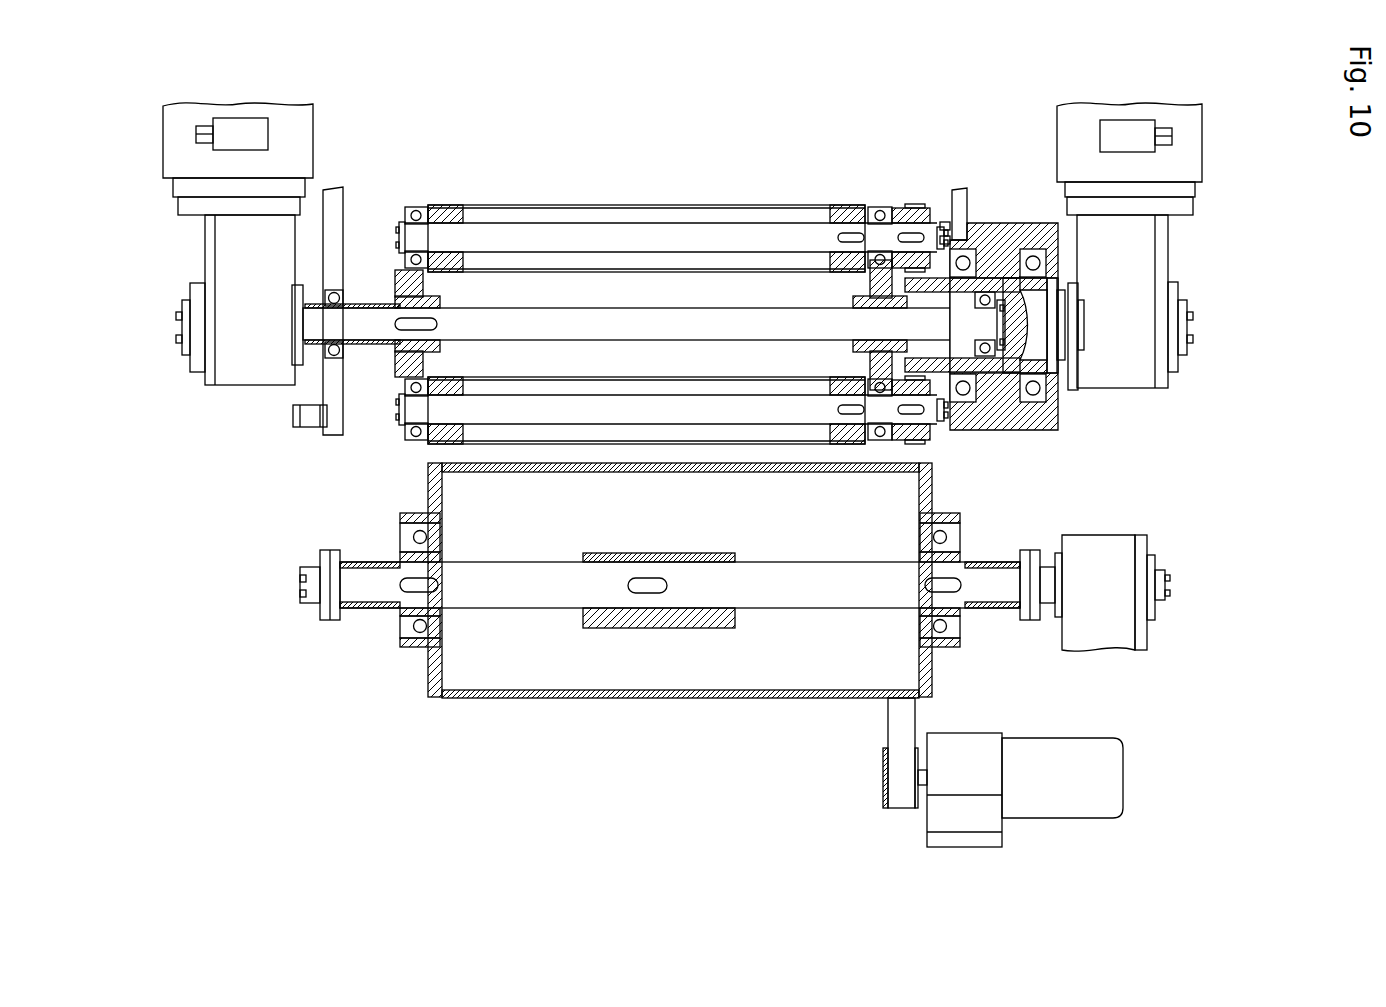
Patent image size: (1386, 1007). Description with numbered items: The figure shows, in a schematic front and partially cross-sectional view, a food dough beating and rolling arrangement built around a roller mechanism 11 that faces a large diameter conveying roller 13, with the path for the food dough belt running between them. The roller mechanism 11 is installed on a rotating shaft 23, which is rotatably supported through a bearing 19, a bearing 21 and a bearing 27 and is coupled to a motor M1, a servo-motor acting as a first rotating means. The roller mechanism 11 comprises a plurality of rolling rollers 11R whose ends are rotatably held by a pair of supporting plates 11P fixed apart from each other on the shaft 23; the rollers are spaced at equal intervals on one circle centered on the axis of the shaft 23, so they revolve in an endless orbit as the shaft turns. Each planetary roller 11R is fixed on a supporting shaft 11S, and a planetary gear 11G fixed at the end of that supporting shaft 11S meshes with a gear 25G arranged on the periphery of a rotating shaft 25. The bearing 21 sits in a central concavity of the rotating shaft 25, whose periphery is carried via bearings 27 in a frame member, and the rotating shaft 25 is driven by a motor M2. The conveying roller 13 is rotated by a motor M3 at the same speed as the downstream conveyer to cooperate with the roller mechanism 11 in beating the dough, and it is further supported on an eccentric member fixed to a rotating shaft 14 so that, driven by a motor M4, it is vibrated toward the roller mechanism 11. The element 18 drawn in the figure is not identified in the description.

The motor M1 is at (240, 108).
The motor M2 is at (1128, 108).
The motor M3 is at (1118, 538).
The motor M4 is at (1110, 758).
The roller mechanism 11 is at (480, 193).
The rolling roller 11R is at (668, 205).
The supporting shaft 11S is at (730, 205).
The supporting plate 11P is at (402, 280).
The planetary gear 11G is at (920, 208).
The rotating shaft 23 is at (646, 302).
The bearing 19 is at (345, 352).
The gear 25G is at (947, 245).
The rotating shaft 25 is at (1045, 323).
The bearing 27 is at (982, 357).
The bearing 21 is at (1022, 400).
The large diameter roller 13 is at (428, 668).
The rotating shaft 14 is at (797, 595).
The hub 18 is at (930, 540).